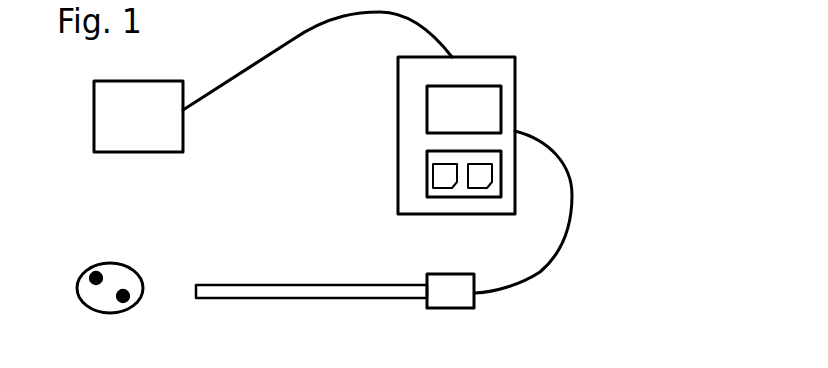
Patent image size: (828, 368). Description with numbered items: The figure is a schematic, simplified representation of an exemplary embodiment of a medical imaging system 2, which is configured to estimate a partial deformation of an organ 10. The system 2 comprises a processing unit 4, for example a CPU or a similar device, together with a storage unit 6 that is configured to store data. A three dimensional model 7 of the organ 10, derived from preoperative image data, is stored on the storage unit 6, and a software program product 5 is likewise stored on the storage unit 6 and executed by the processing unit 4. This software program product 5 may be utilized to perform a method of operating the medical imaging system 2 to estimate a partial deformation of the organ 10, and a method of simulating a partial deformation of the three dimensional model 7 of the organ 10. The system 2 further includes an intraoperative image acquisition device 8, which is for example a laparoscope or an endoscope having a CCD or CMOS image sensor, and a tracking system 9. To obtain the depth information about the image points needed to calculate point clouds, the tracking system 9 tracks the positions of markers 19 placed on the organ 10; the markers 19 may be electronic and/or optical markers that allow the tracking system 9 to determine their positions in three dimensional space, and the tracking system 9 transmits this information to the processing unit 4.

The medical imaging system 2 is at (626, 92).
The processing unit 4 is at (454, 126).
The software program product 5 is at (480, 178).
The storage unit 6 is at (442, 172).
The three dimensional model 7 is at (440, 171).
The intraoperative image acquisition device 8 is at (282, 292).
The tracking system 9 is at (128, 134).
The organ 10 is at (75, 292).
The markers 19 is at (93, 272).